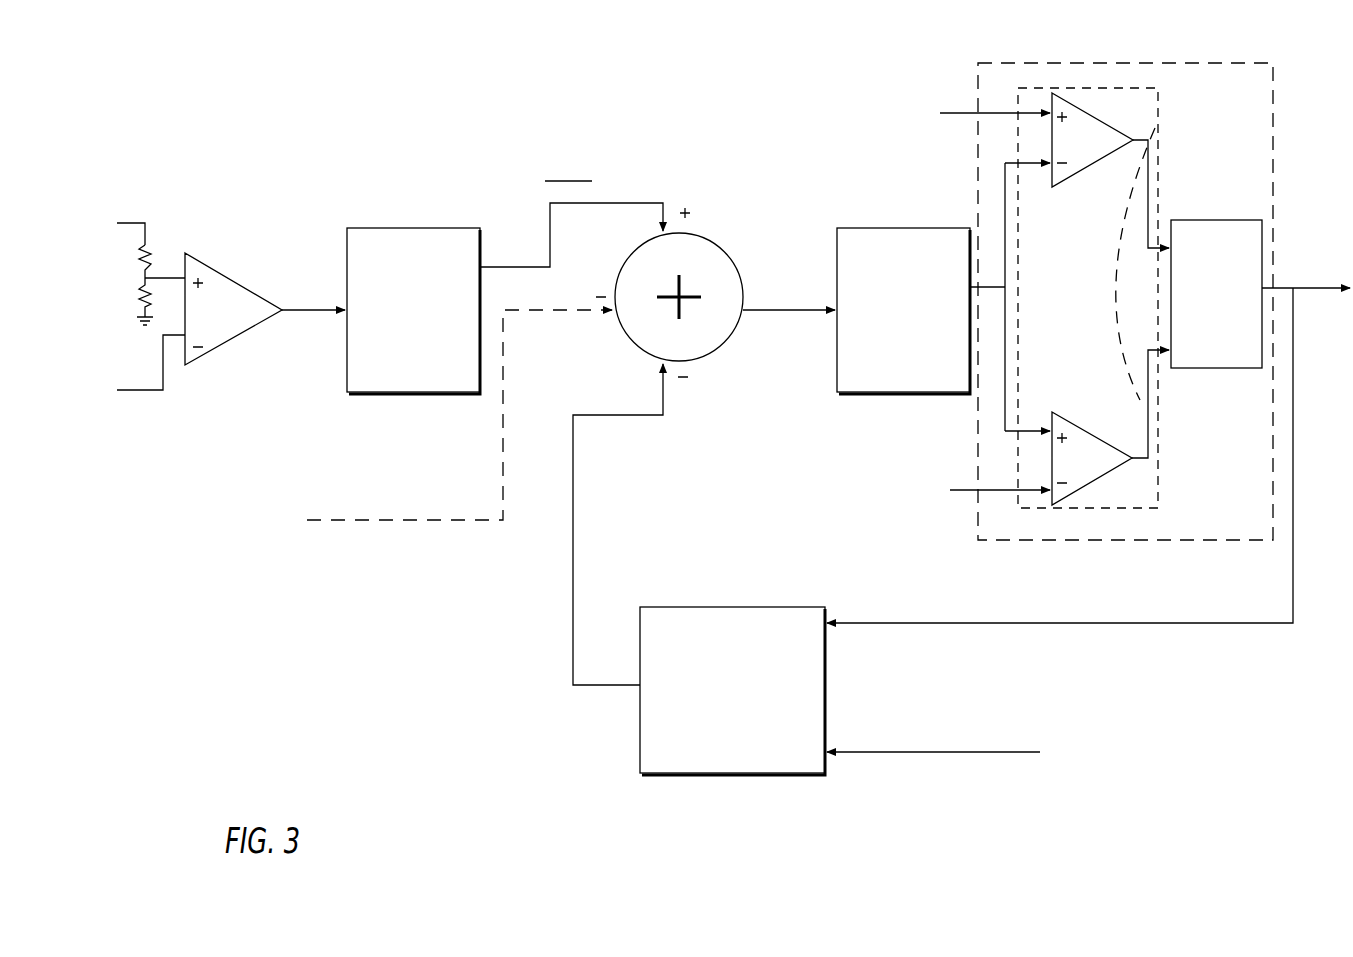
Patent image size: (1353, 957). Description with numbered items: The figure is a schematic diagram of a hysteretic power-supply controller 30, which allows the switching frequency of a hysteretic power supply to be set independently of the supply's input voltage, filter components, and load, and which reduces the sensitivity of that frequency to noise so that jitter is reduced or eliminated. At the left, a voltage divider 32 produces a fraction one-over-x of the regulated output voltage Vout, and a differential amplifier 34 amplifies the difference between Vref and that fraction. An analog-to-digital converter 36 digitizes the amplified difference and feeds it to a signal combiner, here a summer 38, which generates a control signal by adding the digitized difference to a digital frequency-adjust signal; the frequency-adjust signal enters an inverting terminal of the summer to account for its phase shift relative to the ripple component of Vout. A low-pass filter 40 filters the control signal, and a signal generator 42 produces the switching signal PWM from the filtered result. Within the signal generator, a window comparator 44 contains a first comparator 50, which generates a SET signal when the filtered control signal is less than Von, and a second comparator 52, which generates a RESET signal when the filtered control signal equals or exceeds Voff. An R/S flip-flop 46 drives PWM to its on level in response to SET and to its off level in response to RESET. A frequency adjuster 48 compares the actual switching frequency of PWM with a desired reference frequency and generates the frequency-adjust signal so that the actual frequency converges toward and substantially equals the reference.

The hysteretic power-supply controller 30 is at (308, 690).
The voltage divider 32 is at (155, 258).
The differential amplifier 34 is at (232, 278).
The analog-to-digital converter 36 is at (385, 228).
The signal combiner (summer) 38 is at (714, 240).
The low-pass filter 40 is at (853, 228).
The signal generator 42 is at (1020, 542).
The window comparator 44 is at (1140, 130).
The R/S flip-flop 46 is at (1185, 220).
The frequency adjuster 48 is at (663, 607).
The first comparator 50 is at (1108, 112).
The second comparator 52 is at (1110, 427).